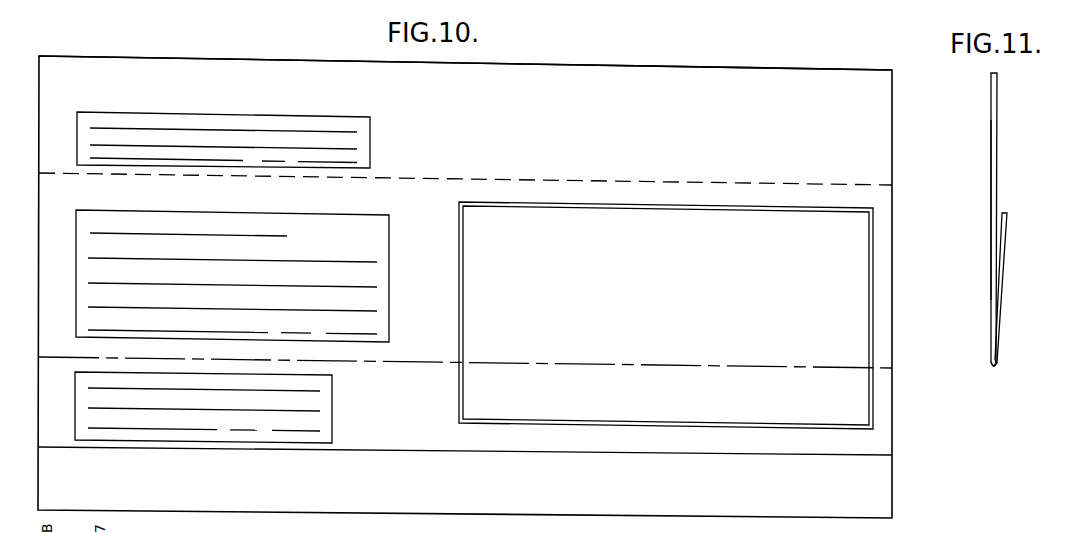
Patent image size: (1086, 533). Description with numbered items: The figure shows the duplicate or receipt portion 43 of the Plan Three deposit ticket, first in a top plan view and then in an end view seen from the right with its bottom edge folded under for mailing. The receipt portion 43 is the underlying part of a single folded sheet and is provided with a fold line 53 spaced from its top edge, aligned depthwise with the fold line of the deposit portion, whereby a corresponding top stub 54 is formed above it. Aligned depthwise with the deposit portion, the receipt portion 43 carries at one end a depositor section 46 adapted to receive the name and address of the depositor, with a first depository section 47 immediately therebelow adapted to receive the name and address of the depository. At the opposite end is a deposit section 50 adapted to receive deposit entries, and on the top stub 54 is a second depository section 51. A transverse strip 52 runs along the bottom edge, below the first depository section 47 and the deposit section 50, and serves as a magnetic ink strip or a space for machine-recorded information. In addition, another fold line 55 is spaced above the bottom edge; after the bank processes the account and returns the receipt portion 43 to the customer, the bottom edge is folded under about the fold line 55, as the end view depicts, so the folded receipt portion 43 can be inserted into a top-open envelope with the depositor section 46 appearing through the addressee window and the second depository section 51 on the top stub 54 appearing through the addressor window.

In FIG. 10, the receipt portion 43 is at (886, 444).
In FIG. 11, the receipt portion 43 is at (990, 253).
In FIG. 10, the depositor section 46 is at (389, 261).
In FIG. 10, the first depository section 47 is at (334, 399).
In FIG. 10, the deposit section 50 is at (459, 292).
In FIG. 10, the second depository section 51 is at (372, 125).
In FIG. 10, the transverse strip 52 is at (417, 460).
In FIG. 10, the fold line 53 is at (533, 181).
In FIG. 11, the fold line 53 is at (997, 185).
In FIG. 10, the top stub 54 is at (613, 77).
In FIG. 11, the top stub 54 is at (998, 90).
In FIG. 10, the fold line 55 is at (531, 362).
In FIG. 11, the fold line 55 is at (993, 370).